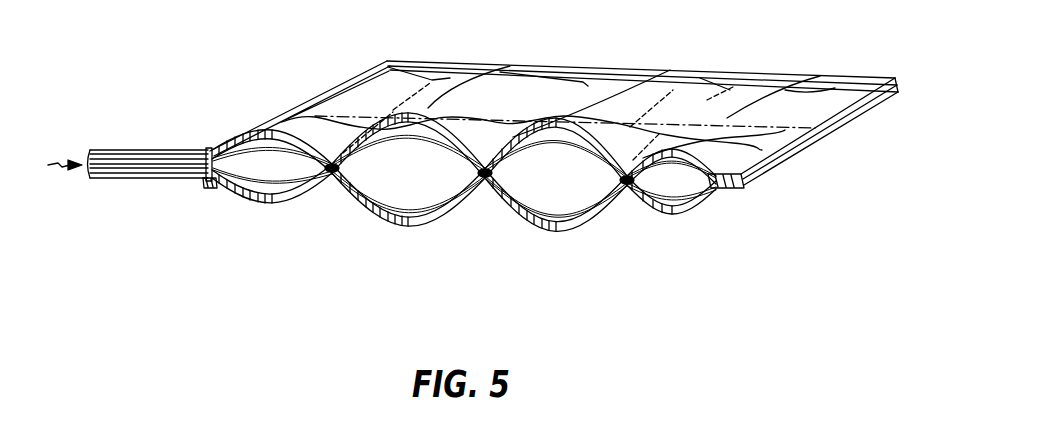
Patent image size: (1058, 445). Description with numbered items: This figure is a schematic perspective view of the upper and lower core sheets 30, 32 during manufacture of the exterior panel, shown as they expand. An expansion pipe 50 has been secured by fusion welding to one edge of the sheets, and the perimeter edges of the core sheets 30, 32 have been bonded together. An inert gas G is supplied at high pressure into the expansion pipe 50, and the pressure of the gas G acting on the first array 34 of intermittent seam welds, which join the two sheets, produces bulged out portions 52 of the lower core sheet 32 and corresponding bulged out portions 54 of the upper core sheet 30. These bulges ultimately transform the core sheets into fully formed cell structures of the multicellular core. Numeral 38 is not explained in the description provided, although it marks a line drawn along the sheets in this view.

The upper core sheet 30 is at (882, 83).
The lower core sheet 32 is at (867, 112).
The first array of intermittent seam welds 34 is at (552, 107).
The centerline strand 38 is at (777, 127).
The expansion pipe 50 is at (141, 146).
The bulged out portions of the lower core sheet 52 is at (272, 204).
The bulged out portions of the upper core sheet 54 is at (262, 136).
The inert gas G is at (56, 166).